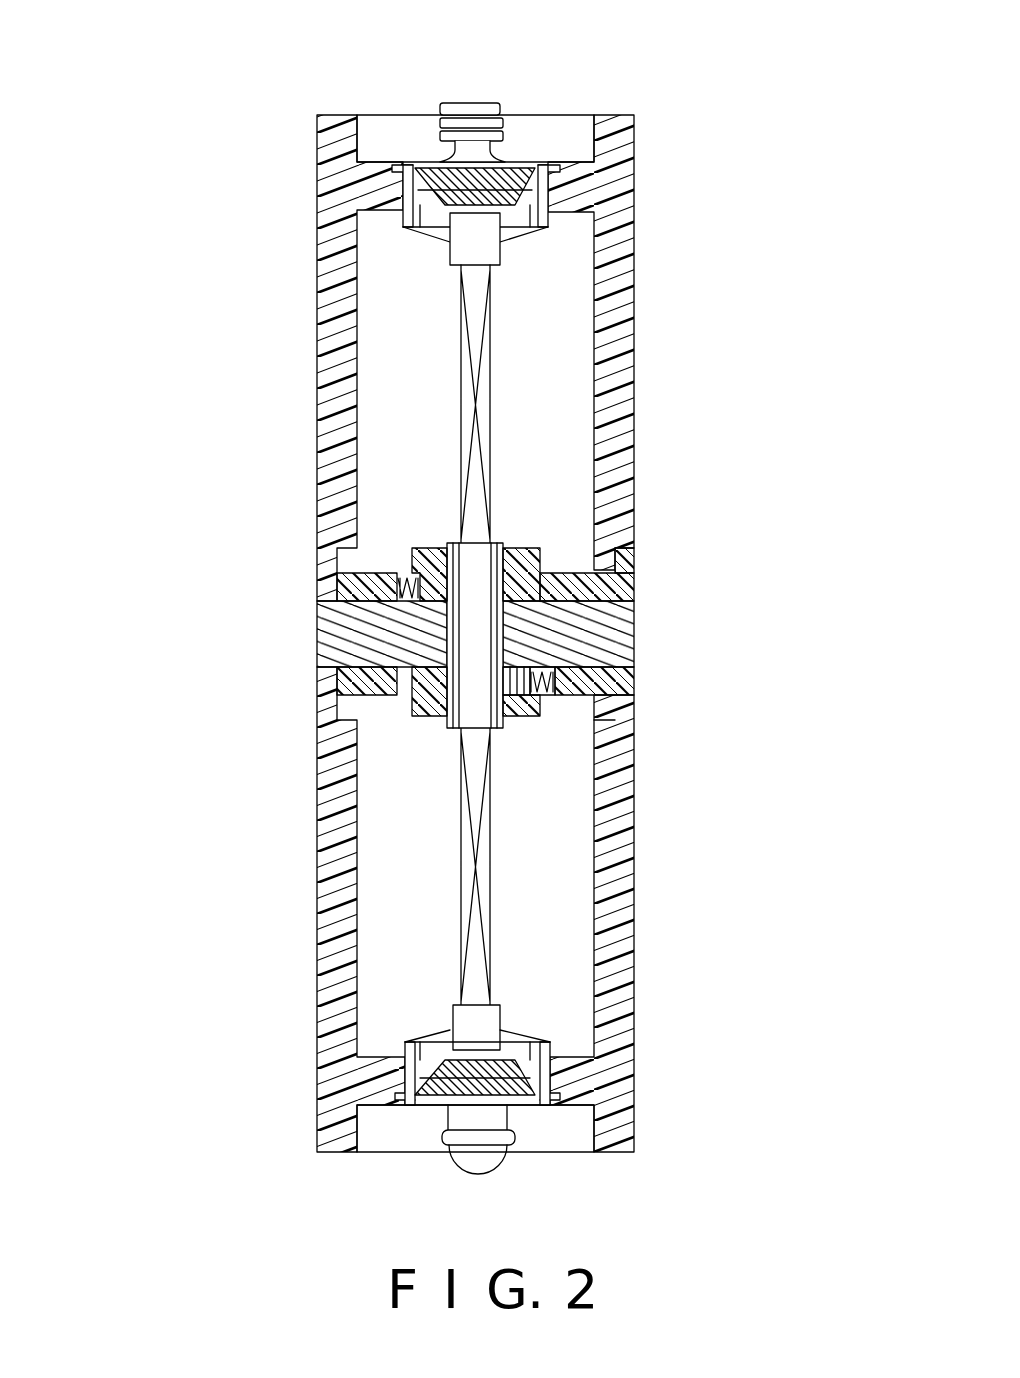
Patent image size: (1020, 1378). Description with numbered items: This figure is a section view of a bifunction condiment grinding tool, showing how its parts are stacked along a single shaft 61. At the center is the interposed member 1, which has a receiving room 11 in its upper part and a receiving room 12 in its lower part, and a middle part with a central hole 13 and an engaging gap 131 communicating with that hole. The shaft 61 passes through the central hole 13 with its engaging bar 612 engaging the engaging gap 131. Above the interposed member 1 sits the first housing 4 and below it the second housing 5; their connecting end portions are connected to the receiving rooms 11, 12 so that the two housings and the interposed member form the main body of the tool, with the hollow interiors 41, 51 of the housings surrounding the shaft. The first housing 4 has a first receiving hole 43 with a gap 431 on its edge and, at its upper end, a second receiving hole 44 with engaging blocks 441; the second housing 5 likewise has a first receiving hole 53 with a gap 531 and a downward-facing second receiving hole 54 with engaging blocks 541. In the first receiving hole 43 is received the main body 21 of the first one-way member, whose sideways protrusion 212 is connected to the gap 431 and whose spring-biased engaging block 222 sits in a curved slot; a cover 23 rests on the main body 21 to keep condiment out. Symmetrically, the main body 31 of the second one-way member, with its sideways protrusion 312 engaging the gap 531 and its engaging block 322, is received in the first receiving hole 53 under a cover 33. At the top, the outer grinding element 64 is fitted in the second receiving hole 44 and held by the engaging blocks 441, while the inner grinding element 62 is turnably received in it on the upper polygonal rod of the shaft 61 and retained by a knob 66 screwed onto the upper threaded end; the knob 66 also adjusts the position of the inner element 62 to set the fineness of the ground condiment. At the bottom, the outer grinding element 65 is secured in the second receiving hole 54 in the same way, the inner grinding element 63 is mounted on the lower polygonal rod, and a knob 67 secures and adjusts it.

The interposed member 1 is at (337, 628).
The first housing 4 is at (340, 438).
The second housing 5 is at (340, 915).
The receiving room 11 is at (368, 572).
The receiving room 12 is at (355, 683).
The central hole 13 is at (480, 638).
The main body 21 is at (535, 552).
The cover 23 is at (545, 545).
The main body 31 is at (430, 712).
The cover 33 is at (520, 716).
The upper chamber 41 is at (418, 313).
The first receiving hole 43 is at (633, 566).
The second receiving hole 44 is at (580, 196).
The lower chamber 51 is at (408, 938).
The first receiving hole 53 is at (595, 688).
The second receiving hole 54 is at (592, 1080).
The shaft 61 is at (490, 392).
The inner grinding element 62 is at (510, 180).
The inner grinding element 63 is at (440, 1090).
The outer grinding element 64 is at (410, 195).
The outer grinding element 65 is at (405, 1075).
The knob 66 is at (466, 125).
The knob 67 is at (478, 1168).
The engaging gap 131 is at (475, 634).
The sideways protrusion 212 is at (597, 572).
The engaging block 222 is at (425, 585).
The sideways protrusion 312 is at (410, 690).
The engaging block 322 is at (547, 700).
The gap 431 is at (624, 560).
The engaging block 441 is at (552, 183).
The gap 531 is at (429, 691).
The engaging block 541 is at (560, 1060).
The engaging bar 612 is at (363, 612).